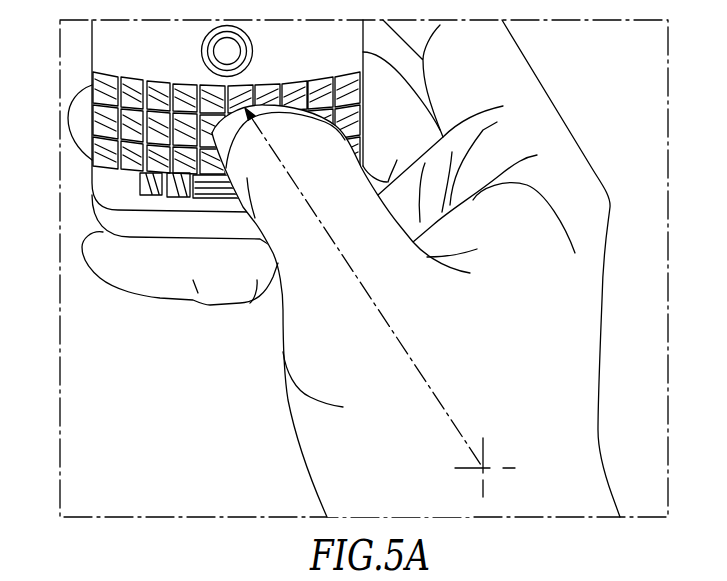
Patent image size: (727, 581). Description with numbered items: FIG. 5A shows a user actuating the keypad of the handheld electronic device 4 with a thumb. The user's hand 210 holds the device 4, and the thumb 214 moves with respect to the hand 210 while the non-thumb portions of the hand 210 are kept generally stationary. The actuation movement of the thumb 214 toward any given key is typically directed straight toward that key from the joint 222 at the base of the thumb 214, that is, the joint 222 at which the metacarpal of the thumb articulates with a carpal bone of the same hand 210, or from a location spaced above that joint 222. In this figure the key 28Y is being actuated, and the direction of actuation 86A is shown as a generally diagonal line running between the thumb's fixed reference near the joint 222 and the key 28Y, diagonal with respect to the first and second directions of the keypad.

The handheld electronic device 4 is at (193, 132).
The key 28Y is at (252, 80).
The hand 210 is at (355, 268).
The thumb 214 is at (262, 308).
The direction of actuation 86A is at (395, 333).
The joint 222 is at (507, 468).